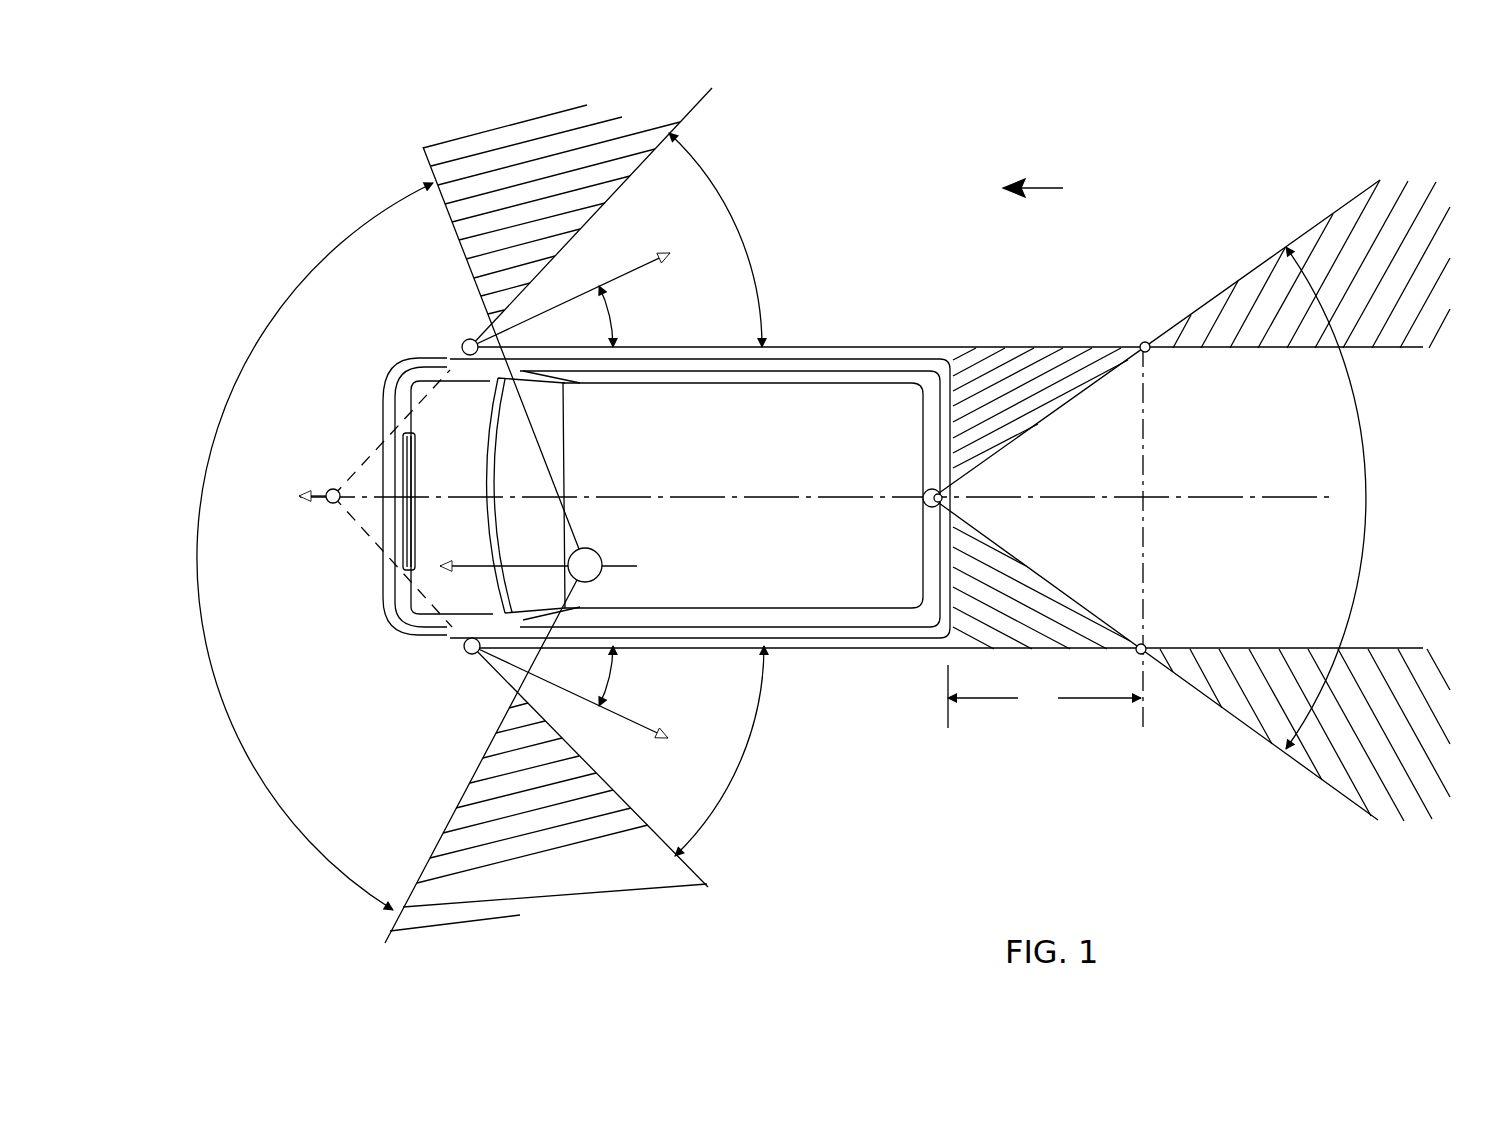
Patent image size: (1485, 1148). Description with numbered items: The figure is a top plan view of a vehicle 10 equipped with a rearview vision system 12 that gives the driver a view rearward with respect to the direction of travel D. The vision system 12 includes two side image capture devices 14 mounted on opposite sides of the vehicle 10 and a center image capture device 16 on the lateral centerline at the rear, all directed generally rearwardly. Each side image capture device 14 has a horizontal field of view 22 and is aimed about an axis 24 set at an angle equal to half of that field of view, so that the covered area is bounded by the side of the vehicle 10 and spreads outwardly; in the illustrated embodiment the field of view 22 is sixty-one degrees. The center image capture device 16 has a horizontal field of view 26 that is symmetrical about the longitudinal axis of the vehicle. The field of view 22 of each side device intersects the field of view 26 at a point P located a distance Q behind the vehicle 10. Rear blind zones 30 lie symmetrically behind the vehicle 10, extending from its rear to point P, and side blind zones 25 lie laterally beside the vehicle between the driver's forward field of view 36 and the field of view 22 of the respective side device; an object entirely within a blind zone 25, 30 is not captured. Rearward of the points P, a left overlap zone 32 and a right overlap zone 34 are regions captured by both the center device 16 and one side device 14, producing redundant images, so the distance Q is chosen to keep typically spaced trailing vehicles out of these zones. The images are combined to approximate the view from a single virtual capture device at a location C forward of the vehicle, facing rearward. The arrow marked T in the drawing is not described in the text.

The vehicle 10 is at (838, 388).
The rearview vision system 12 is at (784, 563).
The side image capture devices 14 is at (462, 342).
The center image capture device 16 is at (927, 491).
The field of view 22 is at (714, 182).
The axis 24 is at (663, 267).
The side blind zones 25 is at (508, 175).
The horizontal field of view 26 is at (1357, 415).
The rear blind zones 30 is at (996, 405).
The left overlap zone 32 is at (1373, 738).
The right overlap zone 34 is at (1374, 295).
The forward field of view of the driver 36 is at (333, 248).
The location of virtual image capture device C is at (332, 487).
The direction of travel D is at (600, 548).
The point P is at (1143, 345).
The distance Q is at (1044, 696).
The direction of travel T is at (1033, 165).